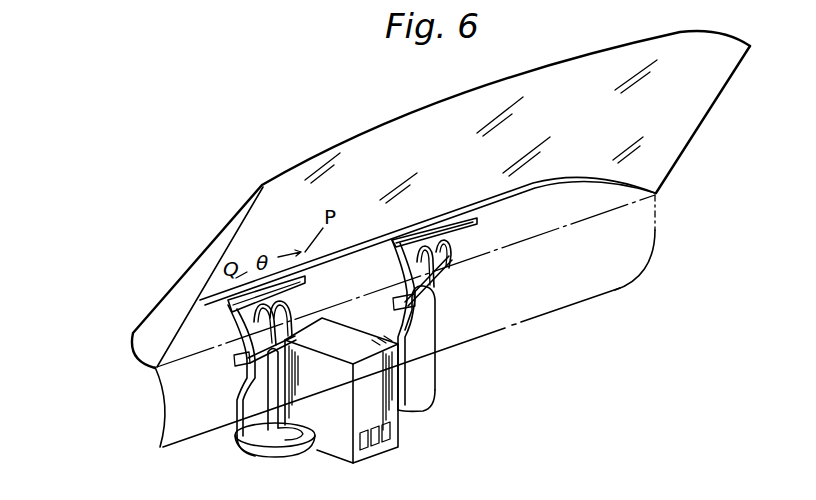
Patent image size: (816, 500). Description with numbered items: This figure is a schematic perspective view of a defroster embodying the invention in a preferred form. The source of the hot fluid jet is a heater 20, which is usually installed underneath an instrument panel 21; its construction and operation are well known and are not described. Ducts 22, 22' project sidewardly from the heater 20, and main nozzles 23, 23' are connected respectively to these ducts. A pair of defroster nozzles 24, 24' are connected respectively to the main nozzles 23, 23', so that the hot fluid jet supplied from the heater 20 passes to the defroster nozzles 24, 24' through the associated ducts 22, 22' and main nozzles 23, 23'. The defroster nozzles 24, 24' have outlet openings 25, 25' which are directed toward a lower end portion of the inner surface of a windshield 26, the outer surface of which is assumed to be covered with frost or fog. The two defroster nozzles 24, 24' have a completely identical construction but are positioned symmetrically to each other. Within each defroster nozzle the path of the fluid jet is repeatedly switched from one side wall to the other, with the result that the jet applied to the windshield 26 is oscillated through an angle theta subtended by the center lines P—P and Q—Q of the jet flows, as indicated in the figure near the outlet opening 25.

The heater 20 is at (390, 452).
The instrument panel 21 is at (650, 253).
The duct 22 is at (275, 424).
The duct 22' is at (450, 349).
The main nozzle 23 is at (226, 370).
The main nozzle 23' is at (440, 325).
The defroster nozzle 24 is at (316, 325).
The defroster nozzle 24' is at (468, 269).
The outlet opening 25 is at (292, 285).
The outlet opening 25' is at (465, 219).
The windshield 26 is at (667, 163).